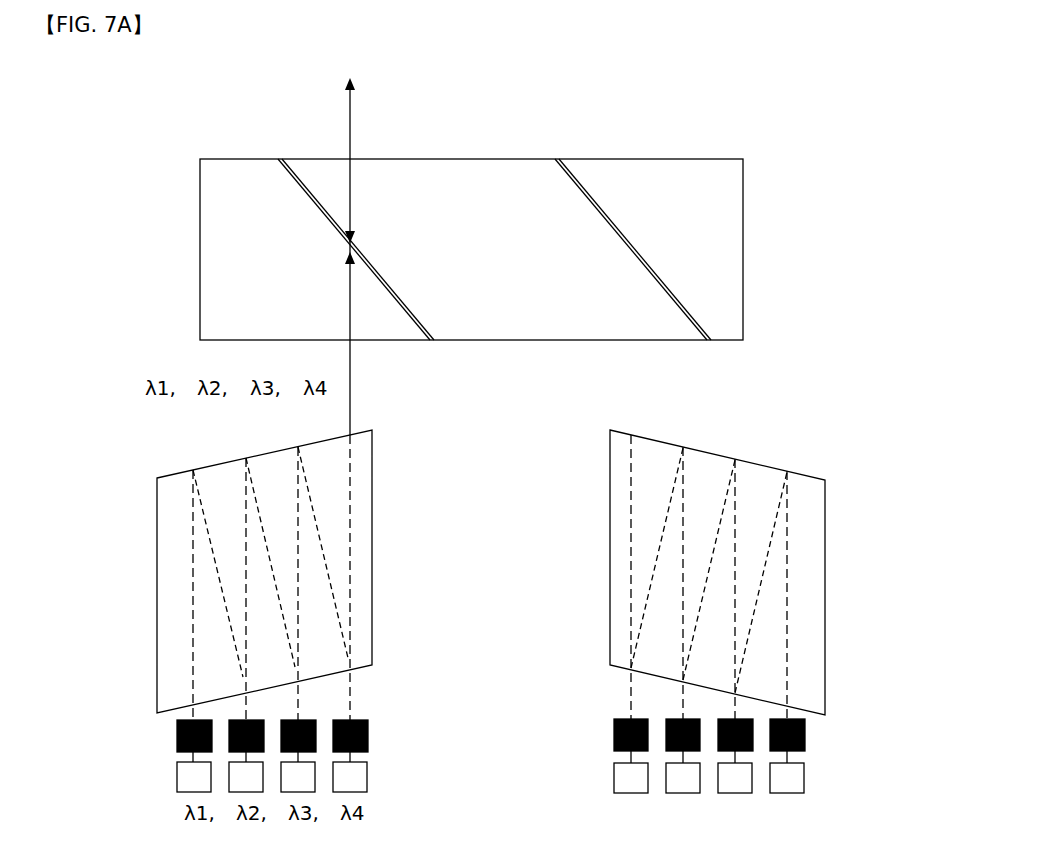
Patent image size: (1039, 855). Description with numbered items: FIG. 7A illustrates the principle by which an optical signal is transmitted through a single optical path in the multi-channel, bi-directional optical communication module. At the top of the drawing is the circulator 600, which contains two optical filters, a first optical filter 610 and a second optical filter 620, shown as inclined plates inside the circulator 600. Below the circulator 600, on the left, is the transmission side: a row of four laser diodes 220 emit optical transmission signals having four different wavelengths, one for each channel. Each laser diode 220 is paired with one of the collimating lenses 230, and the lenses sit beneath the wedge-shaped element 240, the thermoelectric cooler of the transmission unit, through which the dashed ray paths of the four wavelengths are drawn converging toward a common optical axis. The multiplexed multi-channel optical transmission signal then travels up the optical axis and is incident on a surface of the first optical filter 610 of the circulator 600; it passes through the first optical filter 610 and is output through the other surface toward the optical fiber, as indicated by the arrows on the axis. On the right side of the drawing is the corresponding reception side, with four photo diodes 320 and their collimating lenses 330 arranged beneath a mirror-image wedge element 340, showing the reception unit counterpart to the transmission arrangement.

The circulator 600 is at (697, 159).
The first optical filter 610 is at (278, 174).
The second optical filter 620 is at (673, 272).
The thermoelectric cooler 240 is at (157, 668).
The collimating lenses 230 is at (170, 737).
The laser diodes 220 is at (170, 781).
The second prism 340 is at (826, 668).
The collimating lenses 330 is at (814, 737).
The photo diodes 320 is at (814, 780).